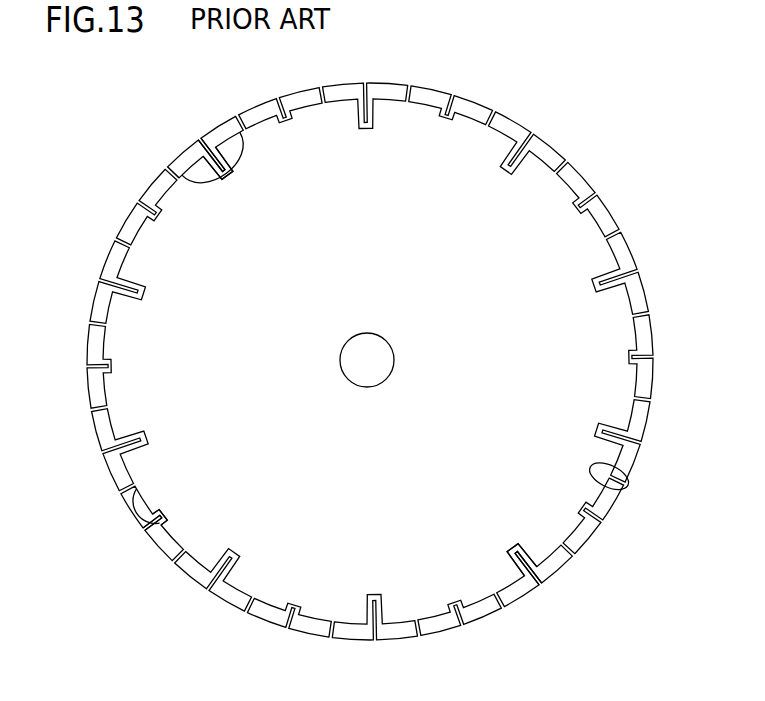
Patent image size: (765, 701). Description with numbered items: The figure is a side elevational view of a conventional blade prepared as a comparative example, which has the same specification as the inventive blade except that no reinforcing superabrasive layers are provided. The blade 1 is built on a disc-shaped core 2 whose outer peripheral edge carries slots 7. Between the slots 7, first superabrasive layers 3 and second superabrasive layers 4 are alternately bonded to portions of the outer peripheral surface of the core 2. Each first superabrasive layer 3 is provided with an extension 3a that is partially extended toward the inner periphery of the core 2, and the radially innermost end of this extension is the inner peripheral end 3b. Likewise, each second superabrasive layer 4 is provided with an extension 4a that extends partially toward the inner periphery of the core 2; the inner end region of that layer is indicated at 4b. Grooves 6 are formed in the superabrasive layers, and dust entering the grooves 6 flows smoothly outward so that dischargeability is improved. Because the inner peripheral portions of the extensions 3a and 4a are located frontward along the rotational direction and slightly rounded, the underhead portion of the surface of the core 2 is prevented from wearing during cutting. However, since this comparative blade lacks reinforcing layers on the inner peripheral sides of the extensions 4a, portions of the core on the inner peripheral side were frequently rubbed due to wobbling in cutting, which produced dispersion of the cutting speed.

The rotary cutting blade 1 is at (375, 358).
The core 2 is at (573, 240).
The first superabrasive layer 3 is at (190, 155).
The extension 3a is at (168, 183).
The inner peripheral end 3b is at (232, 160).
The second superabrasive layer 4 is at (135, 508).
The extension 4a is at (153, 530).
The segment end portion 4b is at (122, 478).
The groove 6 is at (533, 573).
The slot 7 is at (605, 500).